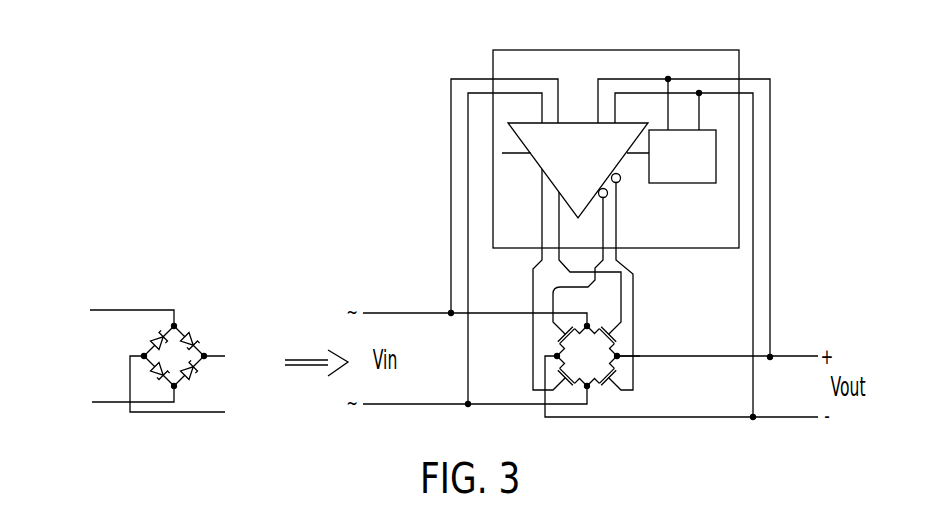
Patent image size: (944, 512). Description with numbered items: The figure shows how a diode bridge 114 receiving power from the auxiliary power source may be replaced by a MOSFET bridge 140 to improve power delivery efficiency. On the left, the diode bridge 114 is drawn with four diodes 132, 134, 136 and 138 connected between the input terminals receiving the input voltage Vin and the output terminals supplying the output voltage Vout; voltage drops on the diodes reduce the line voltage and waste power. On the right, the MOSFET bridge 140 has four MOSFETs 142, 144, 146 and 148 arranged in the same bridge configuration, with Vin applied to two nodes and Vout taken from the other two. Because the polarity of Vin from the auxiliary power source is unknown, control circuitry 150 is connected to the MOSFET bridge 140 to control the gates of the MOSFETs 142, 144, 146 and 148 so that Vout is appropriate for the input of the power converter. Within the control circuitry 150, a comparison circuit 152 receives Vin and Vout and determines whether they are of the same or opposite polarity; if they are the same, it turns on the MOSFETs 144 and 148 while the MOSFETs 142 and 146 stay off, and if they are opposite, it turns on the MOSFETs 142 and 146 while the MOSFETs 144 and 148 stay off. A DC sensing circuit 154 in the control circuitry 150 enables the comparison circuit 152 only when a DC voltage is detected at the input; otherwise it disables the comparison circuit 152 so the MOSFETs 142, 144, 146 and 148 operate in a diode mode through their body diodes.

The diode bridge 114 is at (168, 336).
The diode 132 is at (143, 342).
The diode 134 is at (155, 382).
The diode 136 is at (197, 390).
The diode 138 is at (197, 337).
The MOSFET bridge 140 is at (623, 351).
The MOSFET 142 is at (555, 330).
The MOSFET 144 is at (555, 383).
The MOSFET 146 is at (617, 382).
The MOSFET 148 is at (617, 330).
The control circuitry 150 is at (627, 230).
The comparison circuit 152 is at (537, 163).
The DC sensing circuit 154 is at (682, 185).